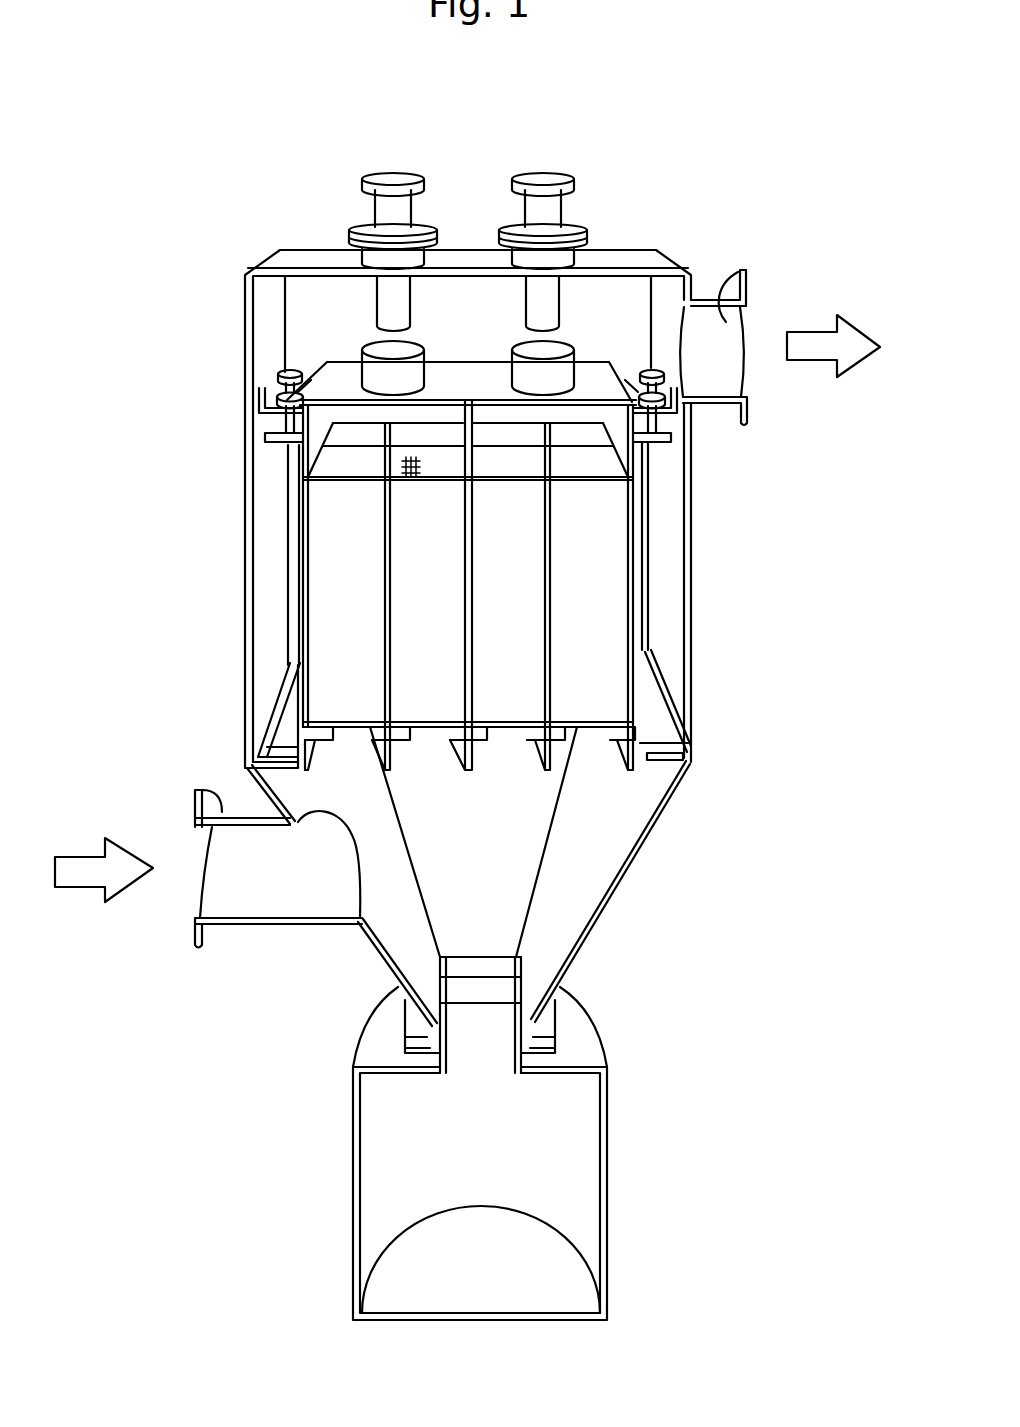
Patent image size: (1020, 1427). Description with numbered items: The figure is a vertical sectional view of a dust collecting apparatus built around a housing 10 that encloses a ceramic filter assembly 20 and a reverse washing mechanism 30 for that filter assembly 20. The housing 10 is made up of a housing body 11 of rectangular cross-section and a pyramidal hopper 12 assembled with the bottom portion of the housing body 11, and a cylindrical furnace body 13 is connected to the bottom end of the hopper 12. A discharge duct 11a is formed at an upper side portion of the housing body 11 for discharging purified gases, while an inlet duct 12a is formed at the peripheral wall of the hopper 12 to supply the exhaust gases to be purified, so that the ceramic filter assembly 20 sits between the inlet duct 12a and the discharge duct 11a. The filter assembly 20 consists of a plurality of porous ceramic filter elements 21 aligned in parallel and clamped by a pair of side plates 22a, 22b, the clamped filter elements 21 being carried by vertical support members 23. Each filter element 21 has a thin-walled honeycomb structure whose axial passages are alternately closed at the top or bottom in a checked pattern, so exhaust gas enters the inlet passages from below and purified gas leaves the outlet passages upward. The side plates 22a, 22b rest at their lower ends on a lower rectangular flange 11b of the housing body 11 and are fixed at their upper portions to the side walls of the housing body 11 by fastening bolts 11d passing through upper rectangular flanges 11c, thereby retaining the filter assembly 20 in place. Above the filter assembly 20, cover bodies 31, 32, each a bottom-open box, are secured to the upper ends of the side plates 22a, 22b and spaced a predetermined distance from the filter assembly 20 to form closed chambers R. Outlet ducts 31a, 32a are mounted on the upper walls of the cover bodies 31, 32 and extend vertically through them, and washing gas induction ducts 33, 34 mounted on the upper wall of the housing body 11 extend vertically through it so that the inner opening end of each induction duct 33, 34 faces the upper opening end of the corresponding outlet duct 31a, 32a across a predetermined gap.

The housing 10 is at (240, 675).
The housing body 11 is at (247, 617).
The discharge duct 11a is at (712, 318).
The lower rectangular flange 11b is at (662, 760).
The upper rectangular flanges 11c is at (262, 400).
The fastening bolts 11d is at (285, 372).
The pyramidal hopper 12 is at (600, 920).
The inlet duct 12a is at (279, 918).
The cylindrical furnace body 13 is at (607, 1197).
The ceramic filter assembly 20 is at (656, 616).
The filter elements 21 is at (613, 692).
The side plate 22a is at (638, 512).
The side plate 22b is at (298, 713).
The vertical support members 23 is at (482, 760).
The reverse washing mechanism 30 is at (340, 292).
The cover body 31 is at (575, 356).
The outlet duct 31a is at (609, 363).
The cover body 32 is at (337, 377).
The outlet duct 32a is at (372, 372).
The washing gas induction duct 33 is at (553, 207).
The washing gas induction duct 34 is at (403, 213).
The closed chambers R is at (360, 418).